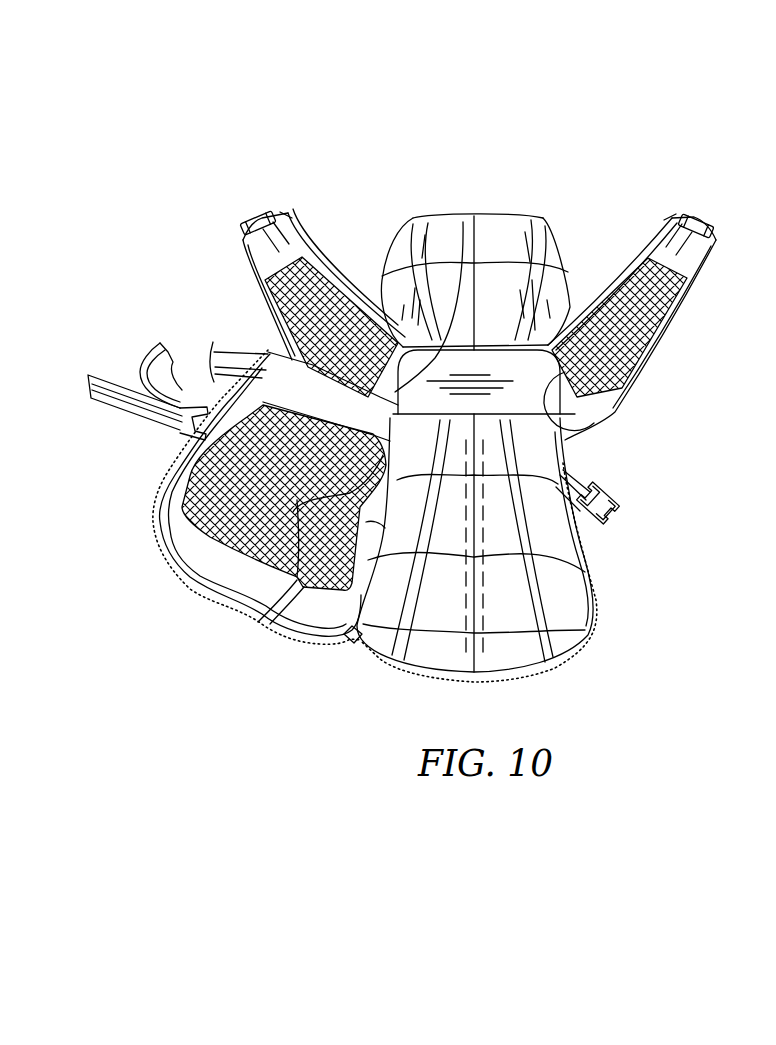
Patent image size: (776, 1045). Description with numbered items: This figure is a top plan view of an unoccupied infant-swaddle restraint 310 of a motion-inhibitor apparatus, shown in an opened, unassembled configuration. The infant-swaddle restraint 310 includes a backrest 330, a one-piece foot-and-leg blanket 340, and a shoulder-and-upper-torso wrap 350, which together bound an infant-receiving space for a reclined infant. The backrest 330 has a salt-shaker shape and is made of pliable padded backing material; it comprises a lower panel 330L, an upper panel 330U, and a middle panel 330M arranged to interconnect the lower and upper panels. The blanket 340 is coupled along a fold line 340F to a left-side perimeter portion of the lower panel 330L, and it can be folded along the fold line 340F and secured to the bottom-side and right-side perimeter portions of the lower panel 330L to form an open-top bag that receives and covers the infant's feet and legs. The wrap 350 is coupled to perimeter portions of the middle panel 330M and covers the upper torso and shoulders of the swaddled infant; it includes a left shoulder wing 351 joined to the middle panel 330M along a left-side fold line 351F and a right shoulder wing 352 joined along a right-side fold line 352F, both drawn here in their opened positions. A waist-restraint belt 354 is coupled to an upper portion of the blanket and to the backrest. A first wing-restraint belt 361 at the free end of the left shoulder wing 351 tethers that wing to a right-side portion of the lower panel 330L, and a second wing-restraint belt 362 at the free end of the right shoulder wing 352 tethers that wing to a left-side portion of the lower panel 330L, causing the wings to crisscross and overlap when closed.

The infant-swaddle restraint 310 is at (621, 163).
The backrest 330 is at (600, 604).
The upper panel 330U is at (547, 260).
The middle panel 330M is at (548, 395).
The lower panel 330L is at (558, 620).
The one-piece foot-and-leg blanket 340 is at (157, 486).
The fold line 340F is at (387, 528).
The shoulder-and-upper-torso wrap 350 is at (363, 297).
The left shoulder wing 351 is at (260, 293).
The left-side fold line 351F is at (463, 222).
The right shoulder wing 352 is at (668, 334).
The right-side fold line 352F is at (558, 430).
The waist-restraint belt 354 is at (95, 372).
The first wing-restraint belt 361 is at (273, 214).
The second wing-restraint belt 362 is at (680, 214).